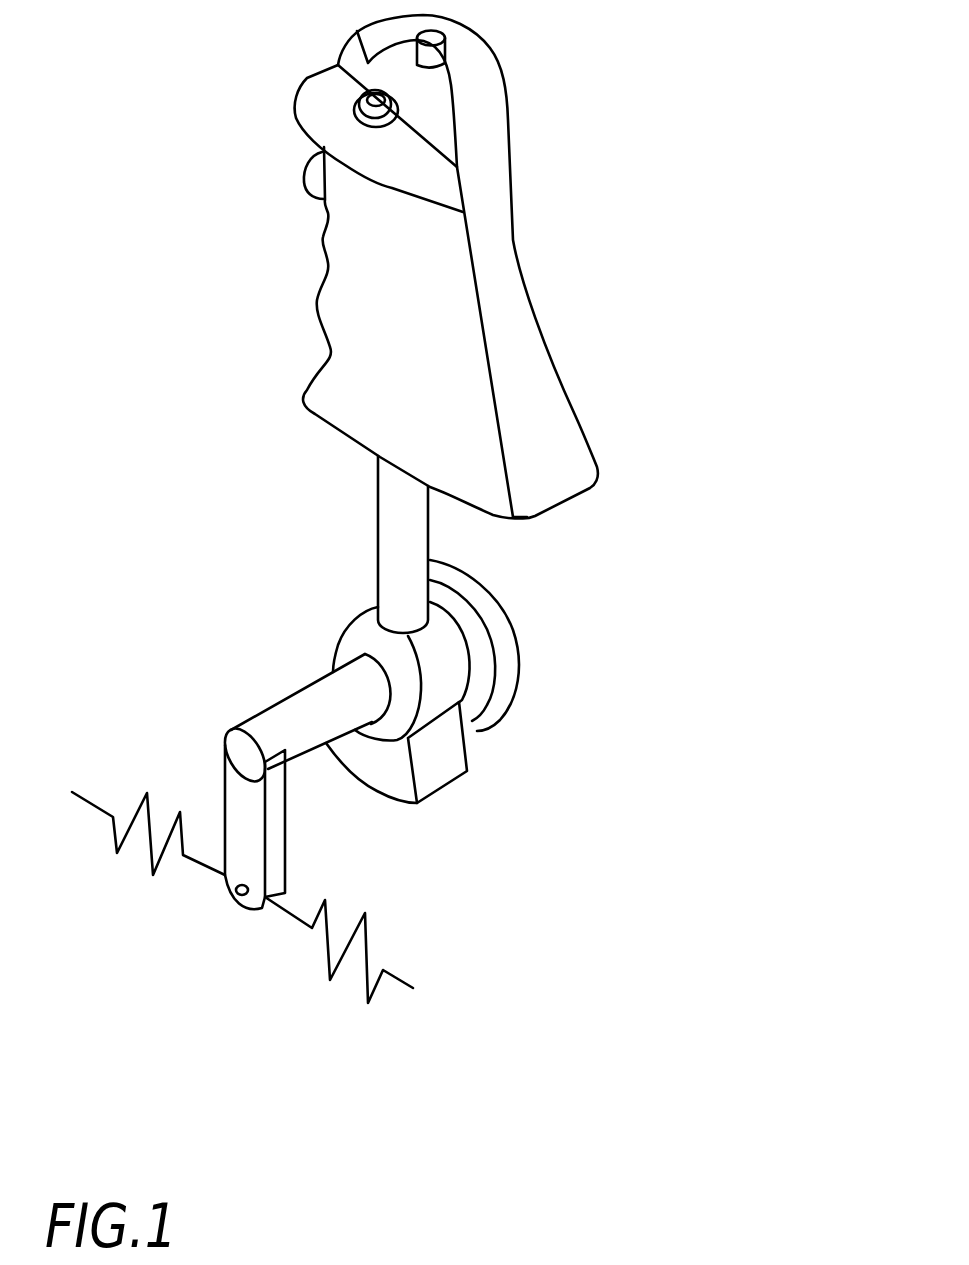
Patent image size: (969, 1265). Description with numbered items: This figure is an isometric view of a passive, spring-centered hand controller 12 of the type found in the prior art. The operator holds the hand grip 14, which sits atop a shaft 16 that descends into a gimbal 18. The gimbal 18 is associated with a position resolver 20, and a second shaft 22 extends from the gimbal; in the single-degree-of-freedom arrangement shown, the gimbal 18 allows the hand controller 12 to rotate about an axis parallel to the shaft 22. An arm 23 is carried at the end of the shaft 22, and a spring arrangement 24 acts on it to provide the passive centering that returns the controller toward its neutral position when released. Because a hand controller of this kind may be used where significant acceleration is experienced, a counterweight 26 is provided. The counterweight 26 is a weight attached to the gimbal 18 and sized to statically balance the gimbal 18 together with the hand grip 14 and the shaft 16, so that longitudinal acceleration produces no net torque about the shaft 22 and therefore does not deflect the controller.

The hand controller 12 is at (697, 315).
The hand grip 14 is at (515, 203).
The shaft 16 is at (430, 527).
The gimbal 18 is at (453, 697).
The position resolver 20 is at (520, 660).
The shaft 22 is at (300, 765).
The arm 23 is at (285, 858).
The spring arrangement 24 is at (147, 870).
The counterweight 26 is at (395, 797).